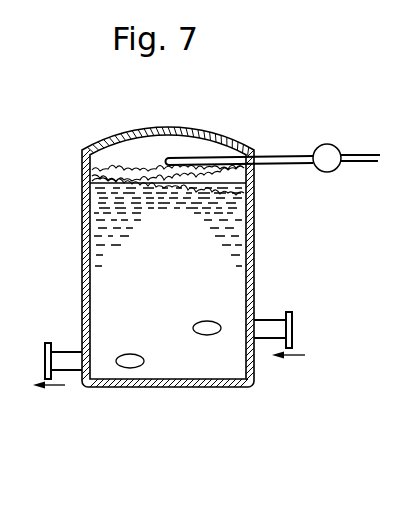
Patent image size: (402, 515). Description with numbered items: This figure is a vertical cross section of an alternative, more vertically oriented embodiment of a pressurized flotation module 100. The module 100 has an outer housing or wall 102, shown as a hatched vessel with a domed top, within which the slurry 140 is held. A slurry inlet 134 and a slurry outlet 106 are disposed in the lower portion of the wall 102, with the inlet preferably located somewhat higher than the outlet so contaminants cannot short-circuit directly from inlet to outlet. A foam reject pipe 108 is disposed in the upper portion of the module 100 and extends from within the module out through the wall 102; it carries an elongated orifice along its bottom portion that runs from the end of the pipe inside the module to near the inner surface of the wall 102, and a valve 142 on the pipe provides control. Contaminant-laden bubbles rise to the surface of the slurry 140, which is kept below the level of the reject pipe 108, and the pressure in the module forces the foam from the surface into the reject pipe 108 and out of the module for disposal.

The module 100 is at (83, 127).
The outer housing or wall 102 is at (255, 358).
The slurry outlet 106 is at (69, 357).
The foam reject pipe 108 is at (271, 158).
The inlet pipe 134 is at (268, 325).
The liquid 140 is at (183, 167).
The valve 142 is at (325, 145).